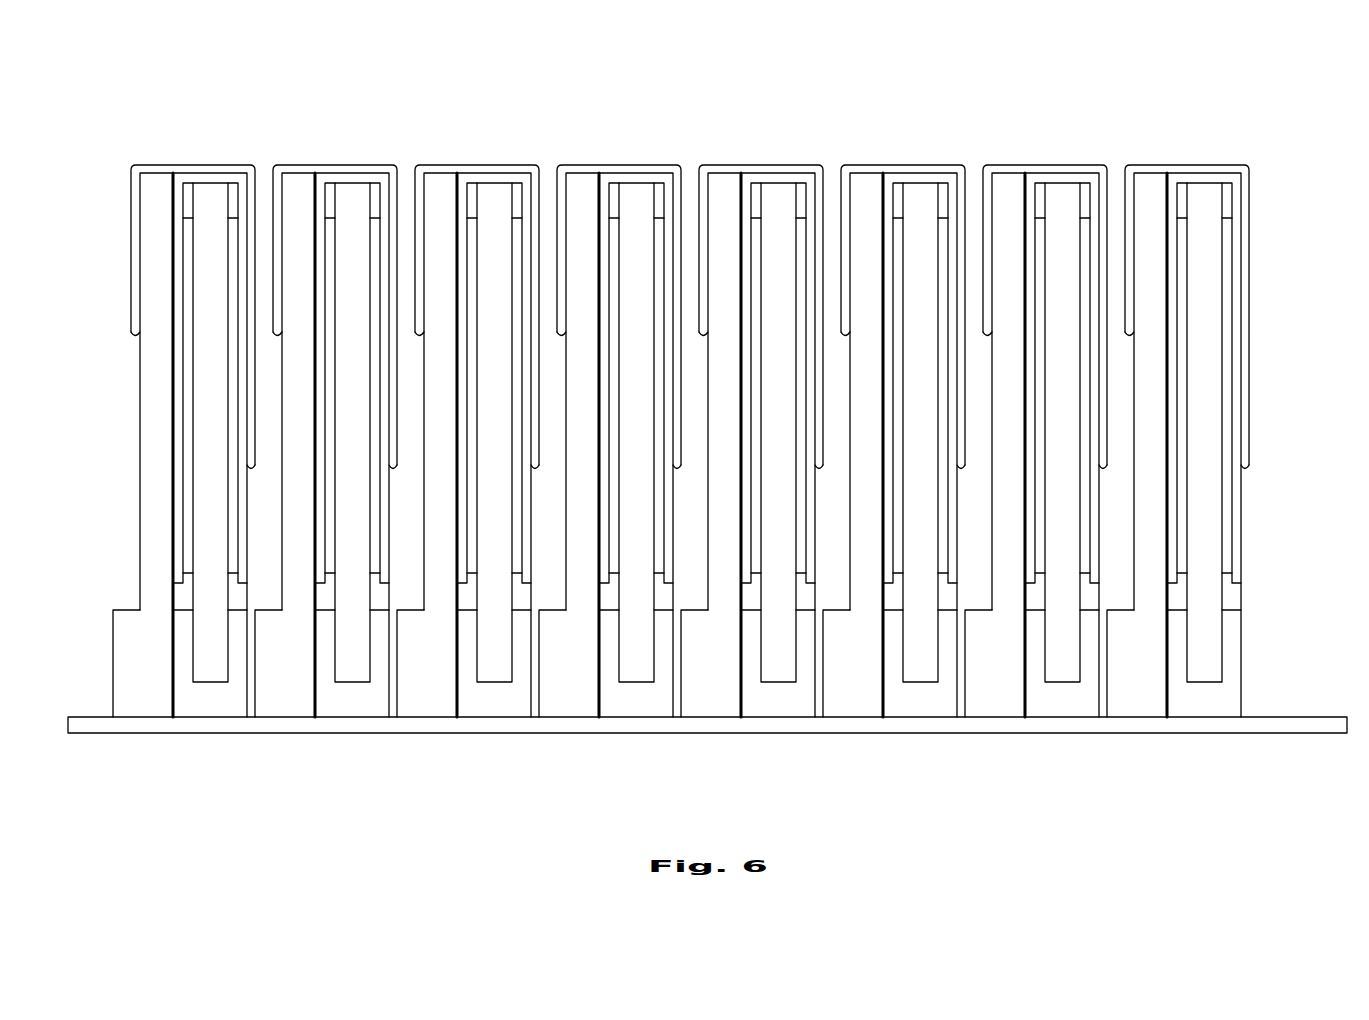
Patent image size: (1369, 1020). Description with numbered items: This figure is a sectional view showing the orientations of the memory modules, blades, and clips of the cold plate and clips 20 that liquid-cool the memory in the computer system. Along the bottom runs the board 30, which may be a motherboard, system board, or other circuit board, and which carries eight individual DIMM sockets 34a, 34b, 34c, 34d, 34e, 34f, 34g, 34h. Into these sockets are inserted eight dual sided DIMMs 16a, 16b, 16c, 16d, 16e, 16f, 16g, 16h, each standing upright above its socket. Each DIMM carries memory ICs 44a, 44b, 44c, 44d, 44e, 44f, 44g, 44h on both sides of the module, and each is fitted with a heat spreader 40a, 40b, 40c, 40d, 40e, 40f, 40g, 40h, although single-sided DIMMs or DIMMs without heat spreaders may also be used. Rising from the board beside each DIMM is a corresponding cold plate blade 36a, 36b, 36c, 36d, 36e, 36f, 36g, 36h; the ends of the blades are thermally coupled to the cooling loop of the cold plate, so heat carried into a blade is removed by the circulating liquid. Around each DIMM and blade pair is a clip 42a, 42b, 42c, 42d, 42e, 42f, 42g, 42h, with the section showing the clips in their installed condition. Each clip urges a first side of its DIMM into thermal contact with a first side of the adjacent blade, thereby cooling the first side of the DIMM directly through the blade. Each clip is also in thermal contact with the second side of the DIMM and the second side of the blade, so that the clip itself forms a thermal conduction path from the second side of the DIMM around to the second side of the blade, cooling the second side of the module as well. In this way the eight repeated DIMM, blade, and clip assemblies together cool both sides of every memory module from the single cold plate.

The cold plate and clips 20 is at (188, 845).
The board 30 is at (1287, 733).
The DIMM 16a is at (210, 663).
The DIMM 16b is at (352, 663).
The DIMM 16c is at (494, 663).
The DIMM 16d is at (636, 663).
The DIMM 16e is at (778, 663).
The DIMM 16f is at (920, 663).
The DIMM 16g is at (1062, 663).
The DIMM 16h is at (1204, 663).
The DIMM socket 34a is at (238, 707).
The DIMM socket 34b is at (380, 707).
The DIMM socket 34c is at (522, 707).
The DIMM socket 34d is at (664, 707).
The DIMM socket 34e is at (806, 707).
The DIMM socket 34f is at (948, 707).
The DIMM socket 34g is at (1090, 707).
The DIMM socket 34h is at (1232, 707).
The blade 36a is at (160, 702).
The blade 36b is at (302, 702).
The blade 36c is at (444, 702).
The blade 36d is at (586, 702).
The blade 36e is at (728, 702).
The blade 36f is at (870, 702).
The blade 36g is at (1012, 702).
The blade 36h is at (1154, 702).
The heat spreader 40a is at (246, 190).
The heat spreader 40b is at (388, 190).
The heat spreader 40c is at (530, 190).
The heat spreader 40d is at (672, 190).
The heat spreader 40e is at (814, 190).
The heat spreader 40f is at (956, 190).
The heat spreader 40g is at (1098, 190).
The heat spreader 40h is at (1240, 190).
The clip 42a is at (153, 172).
The clip 42b is at (295, 172).
The clip 42c is at (437, 172).
The clip 42d is at (579, 172).
The clip 42e is at (721, 172).
The clip 42f is at (863, 172).
The clip 42g is at (1005, 172).
The clip 42h is at (1147, 172).
The memory ICs 44a is at (232, 245).
The memory ICs 44b is at (374, 245).
The memory ICs 44c is at (516, 245).
The memory ICs 44d is at (658, 245).
The memory ICs 44e is at (800, 245).
The memory ICs 44f is at (942, 245).
The memory ICs 44g is at (1084, 245).
The memory ICs 44h is at (1226, 245).